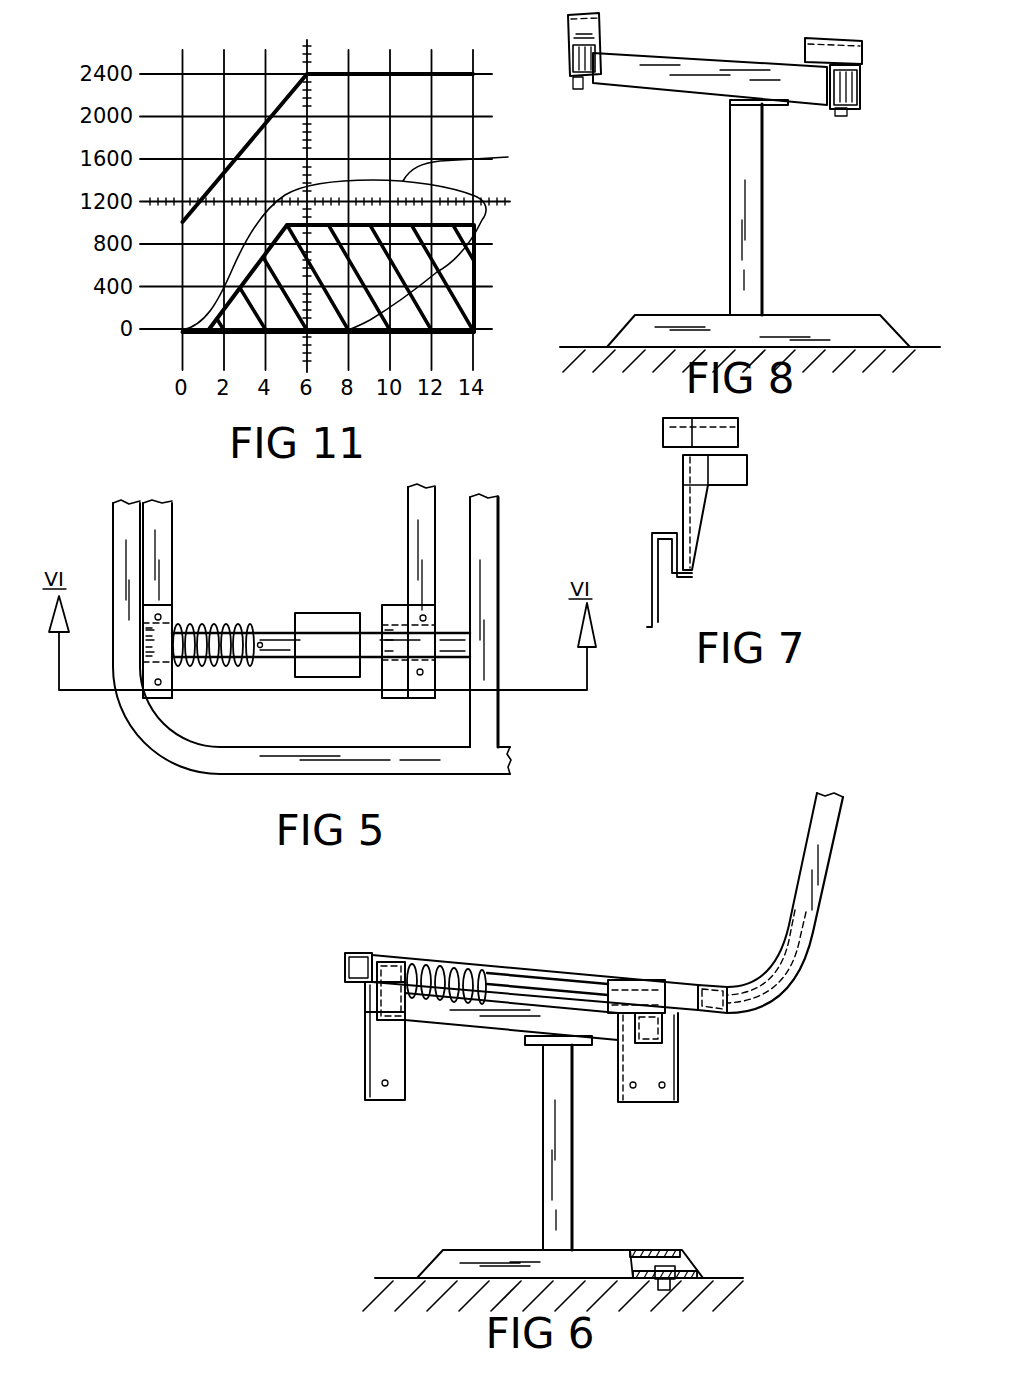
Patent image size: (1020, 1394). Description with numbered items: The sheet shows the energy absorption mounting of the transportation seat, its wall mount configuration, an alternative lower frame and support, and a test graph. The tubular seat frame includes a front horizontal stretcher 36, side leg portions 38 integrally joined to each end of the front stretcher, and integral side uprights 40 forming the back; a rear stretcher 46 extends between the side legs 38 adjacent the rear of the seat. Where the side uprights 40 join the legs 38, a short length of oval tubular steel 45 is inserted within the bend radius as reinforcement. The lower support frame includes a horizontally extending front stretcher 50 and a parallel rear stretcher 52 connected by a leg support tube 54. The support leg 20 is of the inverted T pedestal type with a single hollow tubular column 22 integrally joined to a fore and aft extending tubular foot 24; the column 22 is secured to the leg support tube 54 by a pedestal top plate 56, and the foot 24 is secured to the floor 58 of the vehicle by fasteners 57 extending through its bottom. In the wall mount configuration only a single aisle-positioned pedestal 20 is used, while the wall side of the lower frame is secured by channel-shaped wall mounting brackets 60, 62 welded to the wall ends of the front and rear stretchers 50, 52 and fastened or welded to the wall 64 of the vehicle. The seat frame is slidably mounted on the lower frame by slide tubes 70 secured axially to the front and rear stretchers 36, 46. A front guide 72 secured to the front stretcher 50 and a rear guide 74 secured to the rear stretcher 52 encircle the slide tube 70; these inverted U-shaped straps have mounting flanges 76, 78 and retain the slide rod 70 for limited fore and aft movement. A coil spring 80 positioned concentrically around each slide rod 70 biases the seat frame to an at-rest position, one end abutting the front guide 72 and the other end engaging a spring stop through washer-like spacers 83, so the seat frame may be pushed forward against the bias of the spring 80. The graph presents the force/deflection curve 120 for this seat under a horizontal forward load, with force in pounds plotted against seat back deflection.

In FIG. 6, the leg 20 is at (533, 1113).
In FIG. 8, the tubular column 22 is at (752, 225).
In FIG. 6, the tubular column 22 is at (568, 1150).
In FIG. 8, the tubular foot 24 is at (818, 325).
In FIG. 6, the tubular foot 24 is at (642, 1252).
In FIG. 7, the front horizontal stretcher 36 is at (663, 432).
In FIG. 5, the front horizontal stretcher 36 is at (113, 522).
In FIG. 6, the front horizontal stretcher 36 is at (352, 953).
In FIG. 7, the side leg portion 38 is at (748, 432).
In FIG. 5, the side leg portion 38 is at (225, 765).
In FIG. 6, the side upright 40 is at (817, 843).
In FIG. 6, the reinforcing tubular steel 45 is at (767, 980).
In FIG. 5, the rear stretcher 46 is at (490, 532).
In FIG. 6, the rear stretcher 46 is at (707, 983).
In FIG. 7, the front stretcher 50 is at (730, 477).
In FIG. 5, the front stretcher 50 is at (158, 523).
In FIG. 6, the front stretcher 50 is at (377, 1005).
In FIG. 5, the rear stretcher 52 is at (422, 520).
In FIG. 6, the rear stretcher 52 is at (653, 1023).
In FIG. 8, the leg support tube 54 is at (660, 60).
In FIG. 6, the leg support tube 54 is at (445, 1012).
In FIG. 8, the pedestal top plate 56 is at (730, 104).
In FIG. 5, the pedestal top plate 56 is at (307, 614).
In FIG. 6, the pedestal top plate 56 is at (535, 1041).
In FIG. 6, the fastener 57 is at (675, 1252).
In FIG. 6, the floor 58 is at (738, 1278).
In FIG. 7, the wall mounting bracket 60 is at (685, 517).
In FIG. 6, the wall mounting bracket 60 is at (377, 1053).
In FIG. 6, the wall mounting bracket 62 is at (665, 1073).
In FIG. 7, the wall 64 is at (657, 597).
In FIG. 5, the slide tube 70 is at (368, 632).
In FIG. 6, the slide tube 70 is at (557, 985).
In FIG. 8, the front guide 72 is at (568, 18).
In FIG. 5, the front guide 72 is at (168, 613).
In FIG. 6, the front guide 72 is at (390, 965).
In FIG. 8, the rear guide 74 is at (817, 38).
In FIG. 5, the rear guide 74 is at (422, 615).
In FIG. 6, the rear guide 74 is at (641, 993).
In FIG. 5, the mounting flange 76 is at (145, 672).
In FIG. 5, the mounting flange 78 is at (390, 676).
In FIG. 5, the coil spring 80 is at (220, 622).
In FIG. 5, the washer-like spacer 83 is at (252, 666).
In FIG. 6, the washer-like spacer 83 is at (485, 962).
In FIG. 11, the force/deflection curve 120 is at (480, 167).